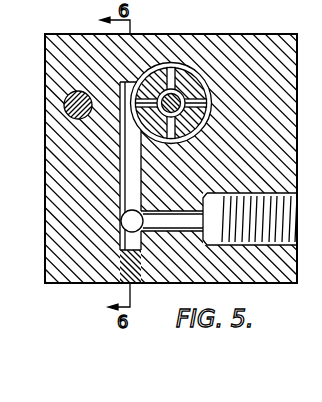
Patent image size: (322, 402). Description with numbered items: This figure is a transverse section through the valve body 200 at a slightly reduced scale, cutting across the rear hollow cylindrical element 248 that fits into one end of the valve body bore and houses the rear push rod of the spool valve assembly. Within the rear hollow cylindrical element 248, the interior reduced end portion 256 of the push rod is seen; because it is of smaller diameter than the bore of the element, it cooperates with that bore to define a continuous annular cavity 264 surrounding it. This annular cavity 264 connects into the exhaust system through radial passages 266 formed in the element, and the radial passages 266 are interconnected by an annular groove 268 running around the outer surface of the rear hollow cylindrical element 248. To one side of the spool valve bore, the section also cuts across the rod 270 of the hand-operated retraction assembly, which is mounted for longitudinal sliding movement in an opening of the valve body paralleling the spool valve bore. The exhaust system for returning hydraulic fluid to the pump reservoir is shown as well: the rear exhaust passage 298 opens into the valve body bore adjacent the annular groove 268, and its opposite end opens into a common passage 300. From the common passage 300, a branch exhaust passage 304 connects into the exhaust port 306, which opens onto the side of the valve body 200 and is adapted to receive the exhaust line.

The housing block 200 is at (280, 50).
The rear hollow cylindrical element 248 is at (153, 77).
The radial passages 266 is at (171, 77).
The interior end portion of push rod 256 is at (183, 100).
The annular groove 268 is at (211, 98).
The continuous annular cavity 264 is at (200, 115).
The rod 270 is at (64, 99).
The rear exhaust passage 298 is at (130, 180).
The common passage 300 is at (122, 222).
The branch exhaust passage 304 is at (173, 226).
The exhaust port 306 is at (263, 232).